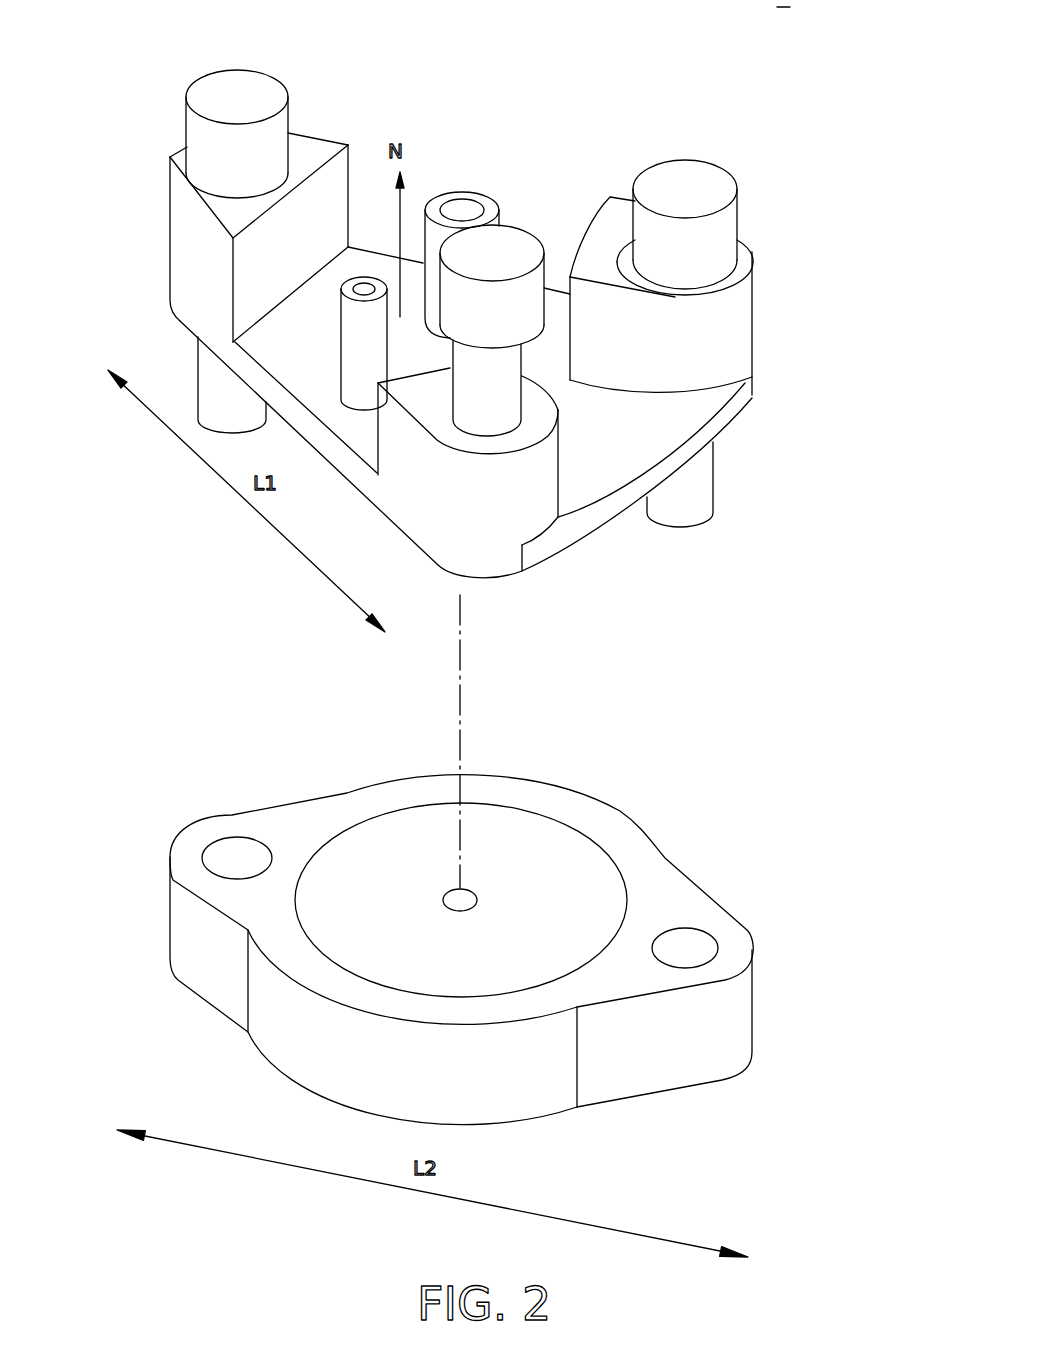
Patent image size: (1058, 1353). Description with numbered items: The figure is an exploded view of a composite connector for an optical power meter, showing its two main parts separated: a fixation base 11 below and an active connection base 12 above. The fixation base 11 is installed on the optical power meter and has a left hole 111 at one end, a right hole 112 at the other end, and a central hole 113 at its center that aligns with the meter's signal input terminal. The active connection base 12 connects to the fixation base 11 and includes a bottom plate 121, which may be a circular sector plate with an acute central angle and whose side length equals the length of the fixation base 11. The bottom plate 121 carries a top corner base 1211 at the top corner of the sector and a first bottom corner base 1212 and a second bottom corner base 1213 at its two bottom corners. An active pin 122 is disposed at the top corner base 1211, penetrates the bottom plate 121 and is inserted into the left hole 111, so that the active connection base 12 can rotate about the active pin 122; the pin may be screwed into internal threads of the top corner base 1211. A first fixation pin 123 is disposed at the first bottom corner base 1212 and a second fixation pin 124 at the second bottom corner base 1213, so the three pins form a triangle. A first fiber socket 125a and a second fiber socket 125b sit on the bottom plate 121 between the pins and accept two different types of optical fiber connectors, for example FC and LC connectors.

The fixation base 11 is at (630, 847).
The left hole 111 is at (237, 856).
The right hole 112 is at (686, 946).
The central hole 113 is at (465, 895).
The active connection base 12 is at (650, 425).
The bottom plate 121 is at (292, 359).
The top corner base 1211 is at (185, 255).
The first bottom corner base 1212 is at (733, 312).
The second bottom corner base 1213 is at (527, 500).
The active pin 122 is at (220, 82).
The first fixation pin 123 is at (688, 186).
The second fixation pin 124 is at (510, 250).
The first fiber socket 125a is at (463, 208).
The second fiber socket 125b is at (365, 287).